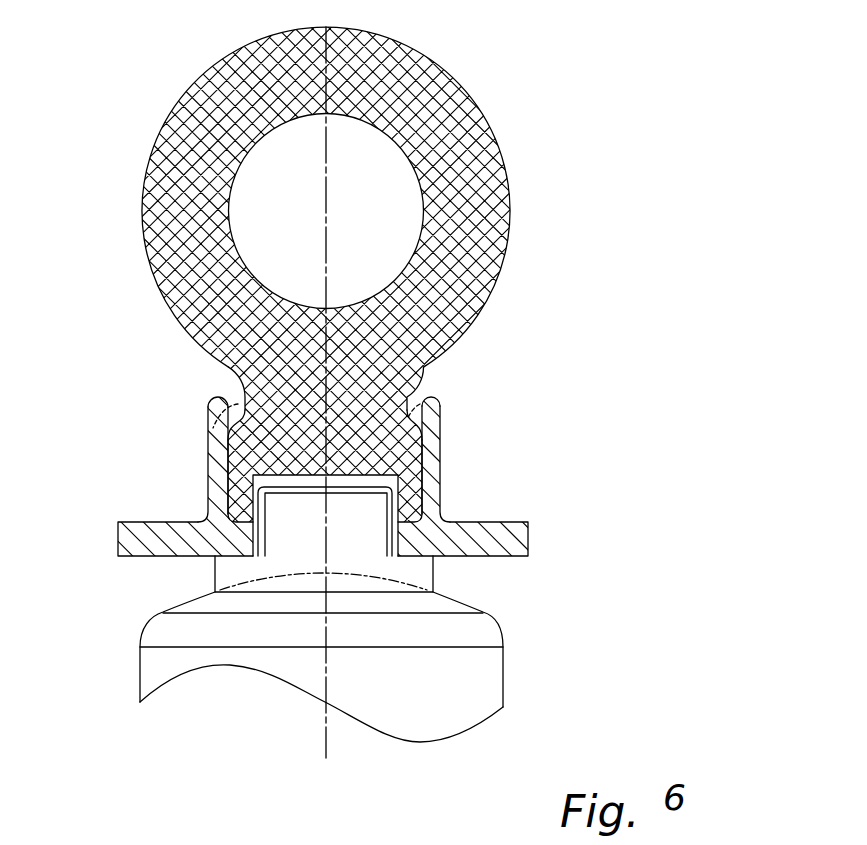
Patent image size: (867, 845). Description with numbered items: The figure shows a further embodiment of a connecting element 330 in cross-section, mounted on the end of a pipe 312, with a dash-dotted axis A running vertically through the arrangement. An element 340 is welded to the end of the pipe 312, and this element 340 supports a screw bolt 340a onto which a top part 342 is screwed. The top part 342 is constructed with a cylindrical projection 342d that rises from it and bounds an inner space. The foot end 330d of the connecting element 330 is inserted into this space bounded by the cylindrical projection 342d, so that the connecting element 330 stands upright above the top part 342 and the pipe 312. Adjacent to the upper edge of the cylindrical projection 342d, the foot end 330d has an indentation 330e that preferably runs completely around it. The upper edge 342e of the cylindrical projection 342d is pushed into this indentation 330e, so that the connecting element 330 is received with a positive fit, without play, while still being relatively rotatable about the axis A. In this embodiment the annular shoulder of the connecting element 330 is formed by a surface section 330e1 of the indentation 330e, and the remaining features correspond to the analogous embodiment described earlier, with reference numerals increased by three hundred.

The connecting element 330 is at (445, 88).
The indentation 330e is at (423, 380).
The surface section of the indentation 330e1 is at (420, 407).
The foot end 330d is at (398, 450).
The screw bolt 340a is at (373, 515).
The element 340 is at (418, 574).
The top part 342 is at (131, 537).
The cylindrical projection 342d is at (220, 477).
The upper edge 342e is at (237, 412).
The pipe 312 is at (487, 688).
The axis A is at (326, 747).